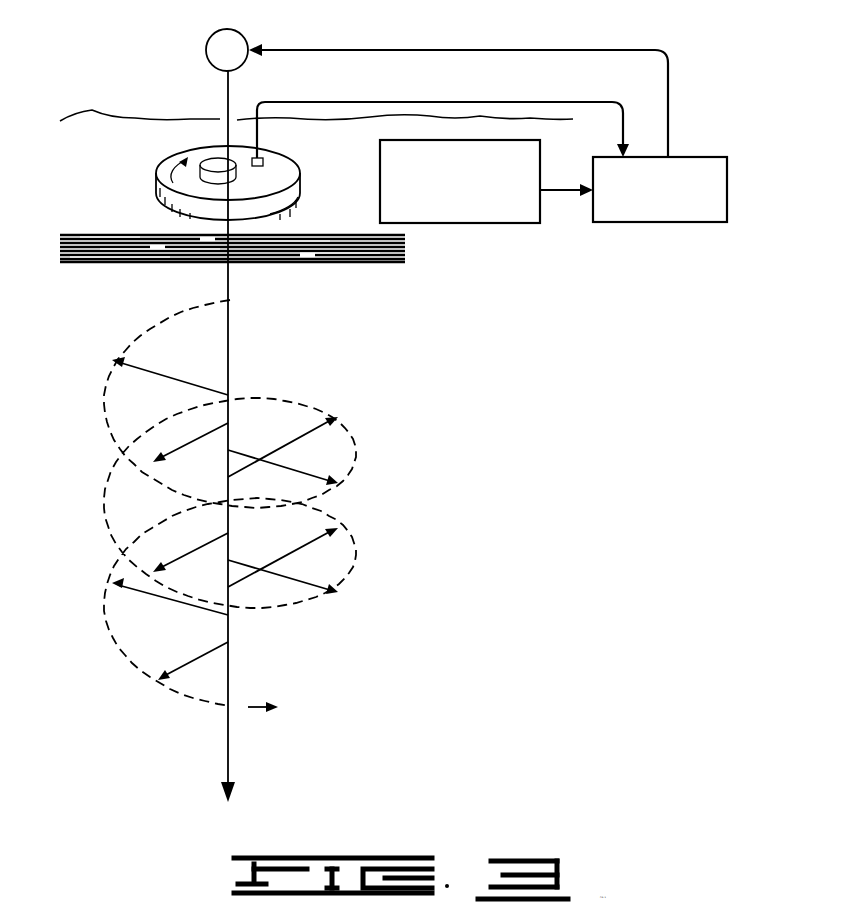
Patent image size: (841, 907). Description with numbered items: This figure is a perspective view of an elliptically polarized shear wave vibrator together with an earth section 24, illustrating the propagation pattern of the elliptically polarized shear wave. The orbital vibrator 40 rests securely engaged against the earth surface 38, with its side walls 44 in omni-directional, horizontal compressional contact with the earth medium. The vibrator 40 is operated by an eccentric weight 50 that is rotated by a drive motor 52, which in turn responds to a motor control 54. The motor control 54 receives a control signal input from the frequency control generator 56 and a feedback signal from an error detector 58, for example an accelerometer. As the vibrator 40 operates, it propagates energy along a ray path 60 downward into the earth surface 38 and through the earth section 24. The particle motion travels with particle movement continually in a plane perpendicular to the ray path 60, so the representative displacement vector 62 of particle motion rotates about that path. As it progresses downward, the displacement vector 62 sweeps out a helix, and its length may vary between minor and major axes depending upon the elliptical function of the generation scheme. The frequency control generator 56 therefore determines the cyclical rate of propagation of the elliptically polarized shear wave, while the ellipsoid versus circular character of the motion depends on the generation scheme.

The earth section 24 is at (405, 336).
The earth surface 38 is at (125, 220).
The orbital vibrator 40 is at (308, 171).
The side walls 44 is at (282, 200).
The eccentric weight 50 is at (203, 160).
The drive motor 52 is at (207, 45).
The motor control 54 is at (697, 222).
The frequency control generator 56 is at (492, 223).
The error detector 58 is at (266, 157).
The ray path 60 is at (228, 280).
The displacement vector 62 is at (157, 371).